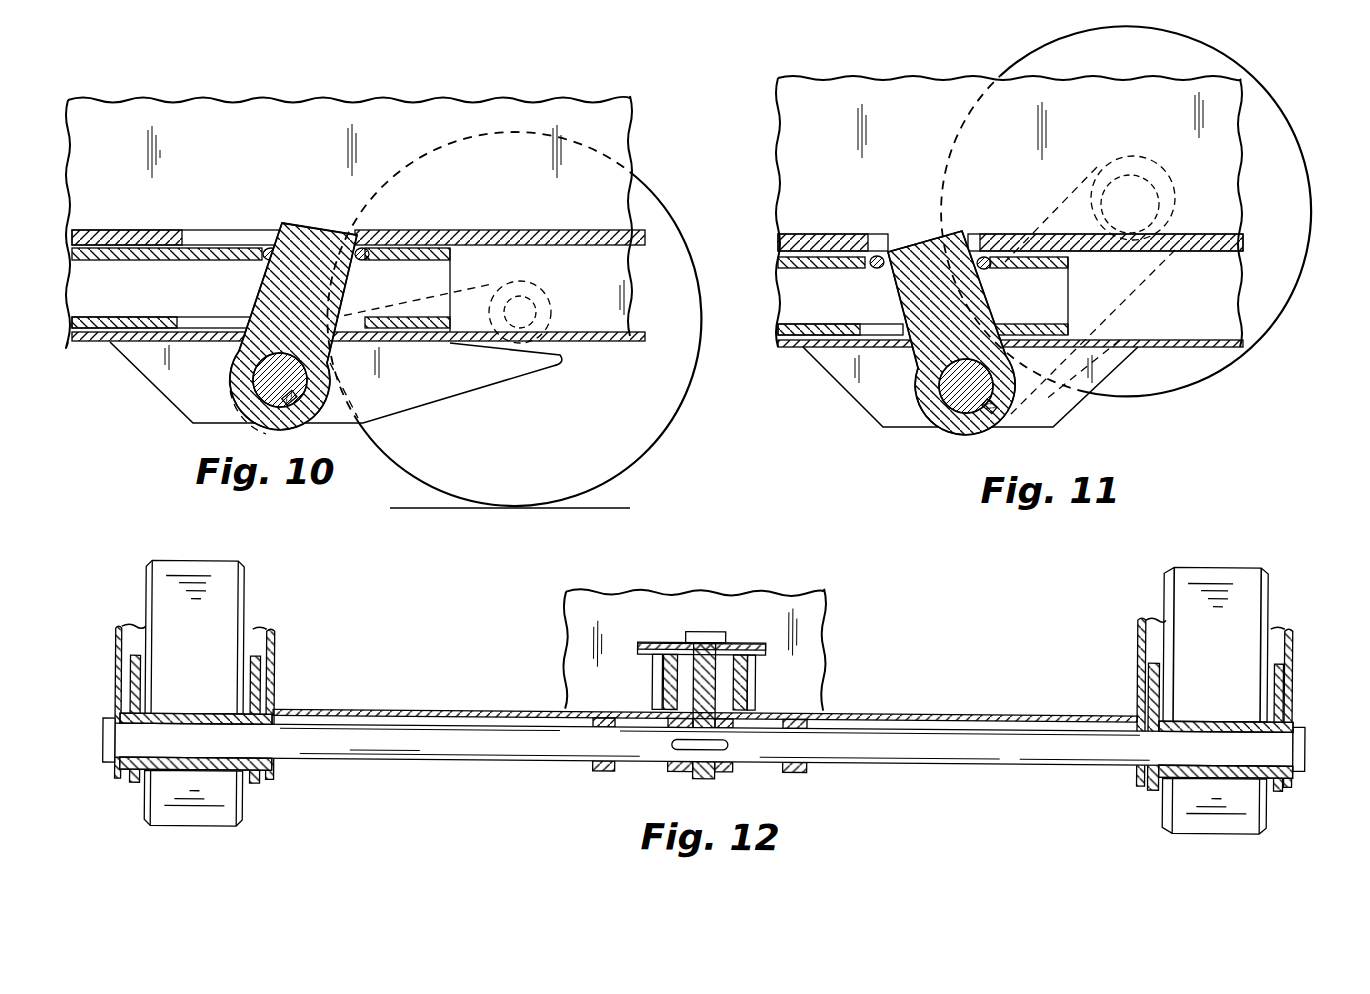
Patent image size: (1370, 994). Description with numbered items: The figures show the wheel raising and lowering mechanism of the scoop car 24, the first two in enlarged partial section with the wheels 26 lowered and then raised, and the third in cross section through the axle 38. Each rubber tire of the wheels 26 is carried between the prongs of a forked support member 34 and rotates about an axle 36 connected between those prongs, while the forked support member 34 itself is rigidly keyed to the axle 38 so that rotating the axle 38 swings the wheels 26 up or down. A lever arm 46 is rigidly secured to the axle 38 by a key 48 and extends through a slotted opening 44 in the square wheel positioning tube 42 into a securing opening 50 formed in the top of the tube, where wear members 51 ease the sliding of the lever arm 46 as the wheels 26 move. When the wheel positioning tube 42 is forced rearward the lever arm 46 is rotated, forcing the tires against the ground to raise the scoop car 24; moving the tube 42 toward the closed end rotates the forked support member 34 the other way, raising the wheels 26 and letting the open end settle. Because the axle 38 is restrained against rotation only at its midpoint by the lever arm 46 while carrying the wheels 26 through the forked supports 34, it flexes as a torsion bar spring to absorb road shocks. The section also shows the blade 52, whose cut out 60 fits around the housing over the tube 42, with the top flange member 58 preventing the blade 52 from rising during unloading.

In FIG. 10, the scoop car 24 is at (476, 96).
In FIG. 11, the scoop car 24 is at (858, 78).
In FIG. 12, the scoop car 24 is at (113, 652).
In FIG. 10, the wheels 26 is at (643, 462).
In FIG. 11, the wheels 26 is at (1200, 386).
In FIG. 12, the wheels 26 is at (245, 588).
In FIG. 10, the forked support member 34 is at (471, 390).
In FIG. 11, the forked support member 34 is at (960, 430).
In FIG. 12, the forked support member 34 is at (261, 679).
In FIG. 10, the axle 36 is at (548, 298).
In FIG. 11, the axle 36 is at (1150, 180).
In FIG. 12, the axle 36 is at (706, 745).
In FIG. 10, the axle 38 is at (256, 386).
In FIG. 11, the axle 38 is at (948, 384).
In FIG. 12, the axle 38 is at (987, 759).
In FIG. 10, the wheel positioning tube 42 is at (224, 246).
In FIG. 11, the wheel positioning tube 42 is at (1070, 297).
In FIG. 12, the wheel positioning tube 42 is at (736, 670).
In FIG. 10, the slotted opening 44 is at (208, 319).
In FIG. 11, the slotted opening 44 is at (875, 328).
In FIG. 10, the lever arm 46 is at (304, 230).
In FIG. 11, the lever arm 46 is at (930, 232).
In FIG. 12, the lever arm 46 is at (710, 627).
In FIG. 10, the key 48 is at (284, 402).
In FIG. 11, the key 48 is at (996, 414).
In FIG. 12, the key 48 is at (730, 741).
In FIG. 10, the securing opening 50 is at (354, 262).
In FIG. 11, the securing opening 50 is at (886, 268).
In FIG. 10, the wear members 51 is at (262, 246).
In FIG. 11, the wear members 51 is at (878, 248).
In FIG. 12, the blade 52 is at (566, 636).
In FIG. 10, the flange member 58 is at (565, 230).
In FIG. 11, the flange member 58 is at (1209, 233).
In FIG. 12, the flange member 58 is at (747, 644).
In FIG. 12, the cut out 60 is at (672, 637).